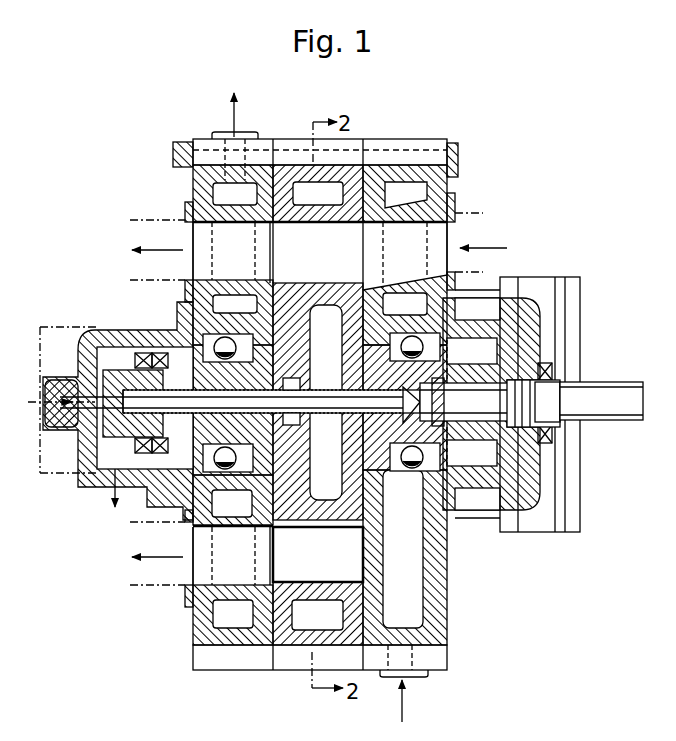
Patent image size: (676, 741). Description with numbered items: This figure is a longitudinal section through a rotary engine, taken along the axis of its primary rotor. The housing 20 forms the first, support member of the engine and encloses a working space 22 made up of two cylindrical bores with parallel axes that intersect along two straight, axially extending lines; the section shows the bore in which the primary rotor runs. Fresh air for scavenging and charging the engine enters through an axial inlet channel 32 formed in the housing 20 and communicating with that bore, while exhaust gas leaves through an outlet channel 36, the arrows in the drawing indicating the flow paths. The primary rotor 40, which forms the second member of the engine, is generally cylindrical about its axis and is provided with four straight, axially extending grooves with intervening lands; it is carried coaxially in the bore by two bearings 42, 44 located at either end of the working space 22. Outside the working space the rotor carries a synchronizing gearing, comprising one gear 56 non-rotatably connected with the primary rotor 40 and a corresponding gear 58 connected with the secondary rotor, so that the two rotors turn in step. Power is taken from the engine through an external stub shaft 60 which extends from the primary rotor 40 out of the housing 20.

The housing 20 is at (395, 145).
The working space 22 is at (352, 256).
The inlet channel 32 is at (420, 250).
The outlet channel 36 is at (200, 236).
The primary rotor 40 is at (328, 233).
The bearing 42 is at (400, 487).
The bearing 44 is at (230, 485).
The gear 56 is at (493, 450).
The gear 58 is at (493, 487).
The stub shaft 60 is at (585, 395).